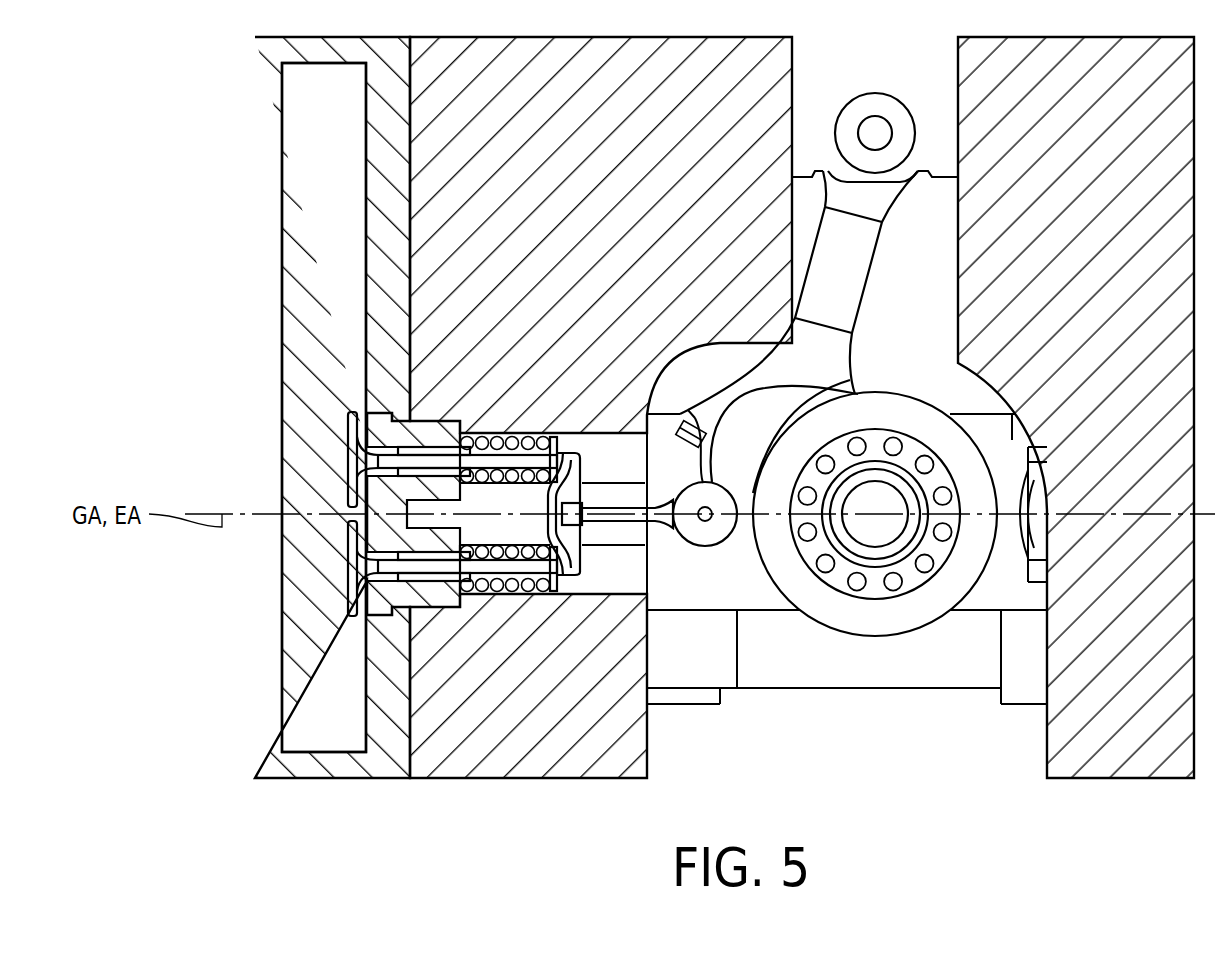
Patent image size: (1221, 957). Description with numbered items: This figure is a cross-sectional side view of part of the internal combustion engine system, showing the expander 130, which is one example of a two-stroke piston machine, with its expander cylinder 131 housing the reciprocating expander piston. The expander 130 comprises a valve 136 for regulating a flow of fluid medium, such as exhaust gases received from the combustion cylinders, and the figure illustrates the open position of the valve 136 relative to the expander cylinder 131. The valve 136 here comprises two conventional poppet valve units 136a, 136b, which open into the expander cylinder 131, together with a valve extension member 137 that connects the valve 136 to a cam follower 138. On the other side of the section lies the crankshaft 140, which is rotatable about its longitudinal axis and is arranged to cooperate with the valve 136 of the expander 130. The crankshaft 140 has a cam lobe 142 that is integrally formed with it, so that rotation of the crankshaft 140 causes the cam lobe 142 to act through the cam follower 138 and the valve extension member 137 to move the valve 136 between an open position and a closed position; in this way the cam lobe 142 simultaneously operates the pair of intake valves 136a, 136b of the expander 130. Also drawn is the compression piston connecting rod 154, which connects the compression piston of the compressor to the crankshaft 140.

The expander 130 is at (318, 208).
The expander cylinder 131 is at (255, 222).
The valve 136 is at (549, 614).
The poppet valve unit 136a is at (348, 461).
The poppet valve unit 136b is at (348, 568).
The valve extension member 137 is at (632, 518).
The cam follower 138 is at (712, 530).
The crankshaft 140 is at (872, 613).
The cam lobe 142 is at (752, 518).
The compression piston connecting rod 154 is at (1005, 546).